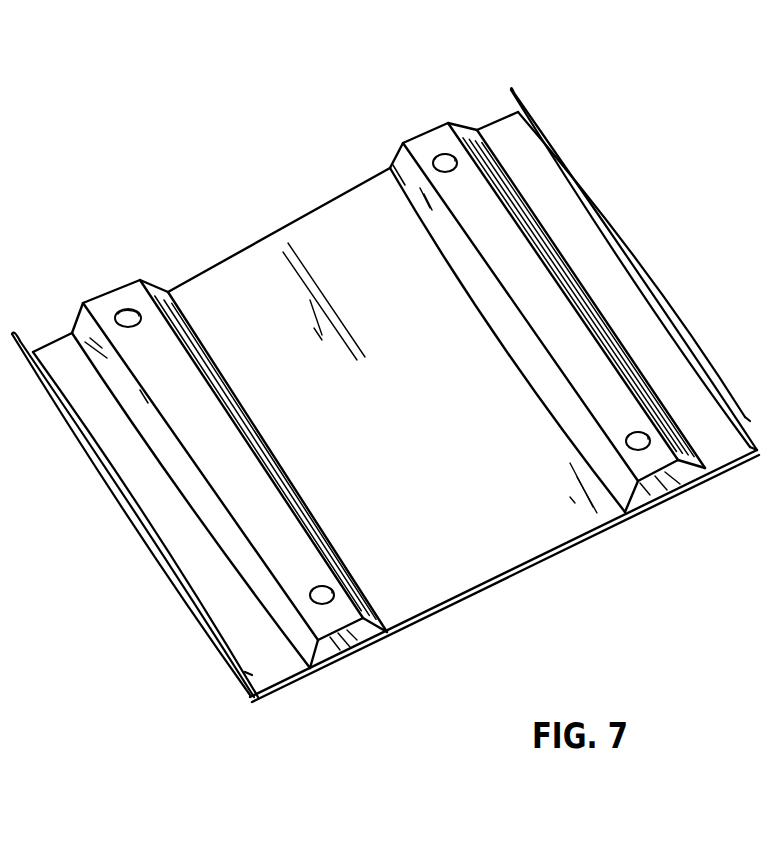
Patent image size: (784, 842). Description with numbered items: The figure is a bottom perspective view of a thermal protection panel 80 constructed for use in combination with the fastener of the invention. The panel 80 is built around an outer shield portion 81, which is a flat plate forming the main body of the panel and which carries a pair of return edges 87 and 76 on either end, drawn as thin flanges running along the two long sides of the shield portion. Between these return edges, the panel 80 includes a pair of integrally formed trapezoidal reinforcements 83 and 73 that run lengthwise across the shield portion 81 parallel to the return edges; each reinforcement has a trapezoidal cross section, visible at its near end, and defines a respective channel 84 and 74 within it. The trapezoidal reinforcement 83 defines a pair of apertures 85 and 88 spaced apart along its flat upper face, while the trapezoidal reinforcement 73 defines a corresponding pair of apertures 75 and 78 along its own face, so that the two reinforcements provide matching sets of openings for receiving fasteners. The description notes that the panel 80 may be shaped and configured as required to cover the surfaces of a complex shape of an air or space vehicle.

The thermal protection panel 80 is at (600, 123).
The outer shield portion 81 is at (518, 568).
The trapezoidal reinforcement 73 is at (305, 640).
The channel 74 is at (355, 640).
The aperture 75 is at (130, 312).
The return edge 76 is at (198, 612).
The aperture 78 is at (332, 598).
The trapezoidal reinforcement 83 is at (716, 466).
The channel 84 is at (676, 480).
The aperture 85 is at (434, 160).
The return edge 87 is at (690, 319).
The aperture 88 is at (650, 436).